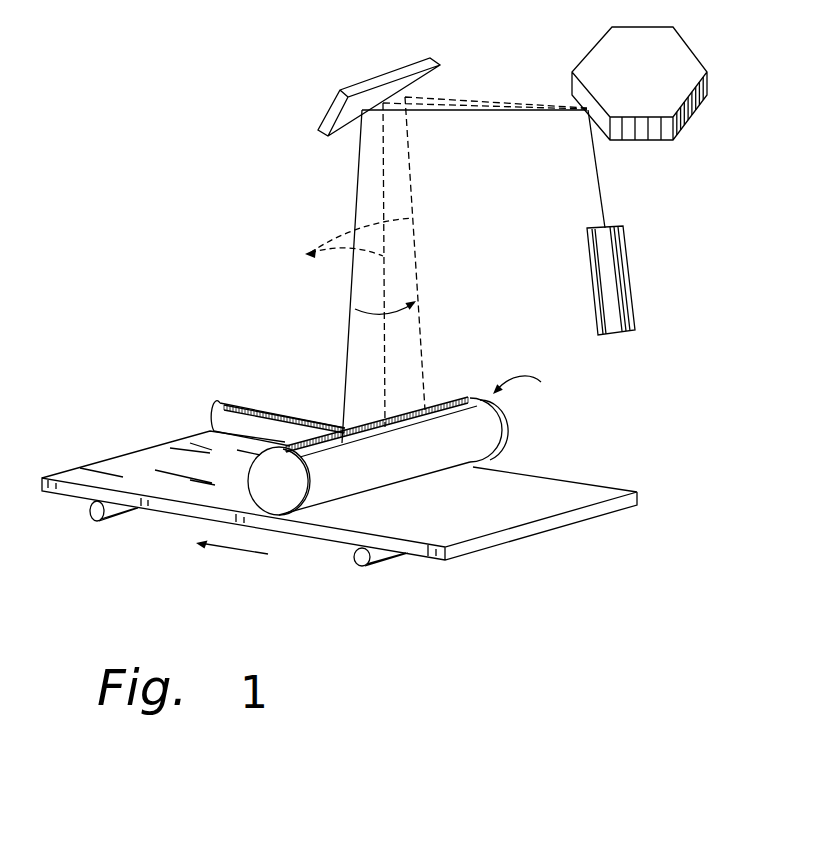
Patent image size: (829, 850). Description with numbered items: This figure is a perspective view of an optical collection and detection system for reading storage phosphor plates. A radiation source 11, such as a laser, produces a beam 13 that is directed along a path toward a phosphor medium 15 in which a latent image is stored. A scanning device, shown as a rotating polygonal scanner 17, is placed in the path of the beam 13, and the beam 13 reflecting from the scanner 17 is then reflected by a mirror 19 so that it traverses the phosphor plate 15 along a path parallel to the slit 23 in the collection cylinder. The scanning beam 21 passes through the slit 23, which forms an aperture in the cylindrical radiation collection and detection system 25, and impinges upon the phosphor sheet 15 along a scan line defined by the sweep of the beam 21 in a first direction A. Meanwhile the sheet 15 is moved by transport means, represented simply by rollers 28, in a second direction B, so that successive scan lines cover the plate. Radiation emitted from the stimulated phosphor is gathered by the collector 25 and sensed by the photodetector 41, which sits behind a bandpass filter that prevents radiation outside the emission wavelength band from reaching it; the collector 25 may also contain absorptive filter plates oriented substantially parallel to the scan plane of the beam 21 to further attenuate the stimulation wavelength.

The radiation source 11 is at (632, 280).
The beam 13 is at (603, 183).
The phosphor medium 15 is at (638, 496).
The rotating polygonal scanner 17 is at (594, 50).
The mirror 19 is at (372, 82).
The scanning beam 21 is at (352, 268).
The slit 23 is at (463, 400).
The cylindrical radiation collection and detection system 25 is at (411, 444).
The rollers 28 is at (119, 514).
The photodetector 41 is at (280, 427).
The first direction A is at (366, 315).
The second direction B is at (221, 548).